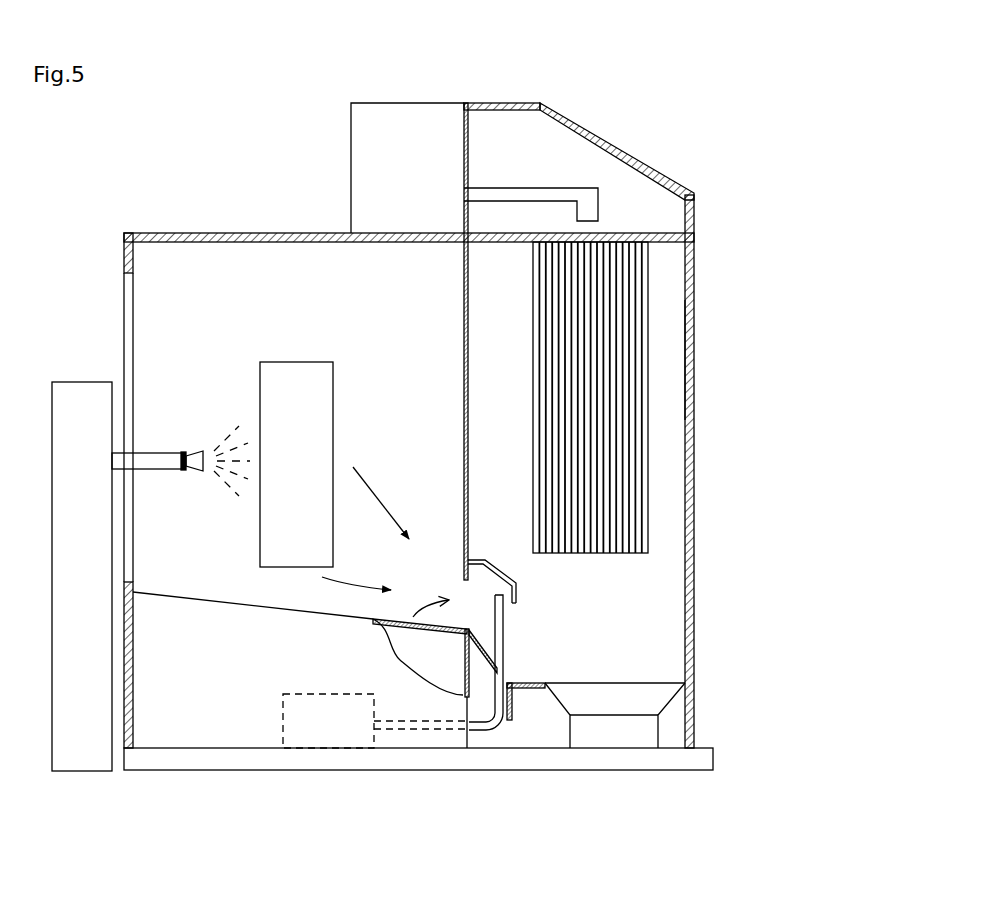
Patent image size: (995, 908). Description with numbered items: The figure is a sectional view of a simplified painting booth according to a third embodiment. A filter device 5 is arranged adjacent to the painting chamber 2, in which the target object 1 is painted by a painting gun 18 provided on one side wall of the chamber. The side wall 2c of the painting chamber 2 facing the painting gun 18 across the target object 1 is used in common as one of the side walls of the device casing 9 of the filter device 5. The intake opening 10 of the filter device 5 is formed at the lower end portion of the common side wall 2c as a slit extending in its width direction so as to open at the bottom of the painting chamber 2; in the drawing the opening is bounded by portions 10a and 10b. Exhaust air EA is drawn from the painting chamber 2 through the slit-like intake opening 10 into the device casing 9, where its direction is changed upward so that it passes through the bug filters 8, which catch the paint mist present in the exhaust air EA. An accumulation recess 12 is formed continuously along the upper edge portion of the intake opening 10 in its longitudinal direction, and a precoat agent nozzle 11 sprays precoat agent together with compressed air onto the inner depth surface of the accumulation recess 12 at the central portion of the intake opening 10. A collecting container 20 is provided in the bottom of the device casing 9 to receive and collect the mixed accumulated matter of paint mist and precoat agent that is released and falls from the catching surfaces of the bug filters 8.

The target object 1 is at (293, 362).
The painting chamber 2 is at (201, 231).
The side wall 2c is at (464, 377).
The filter device 5 is at (652, 154).
The bug filters 8 is at (543, 407).
The device casing 9 is at (696, 365).
The intake opening 10 is at (407, 670).
The inclined plate portion 10a is at (397, 649).
The bracket portion 10b is at (524, 632).
The precoat agent nozzle 11 is at (507, 613).
The accumulation recess 12 is at (482, 577).
The painting gun 18 is at (168, 452).
The collecting container 20 is at (609, 728).
The exhaust air EA is at (360, 583).